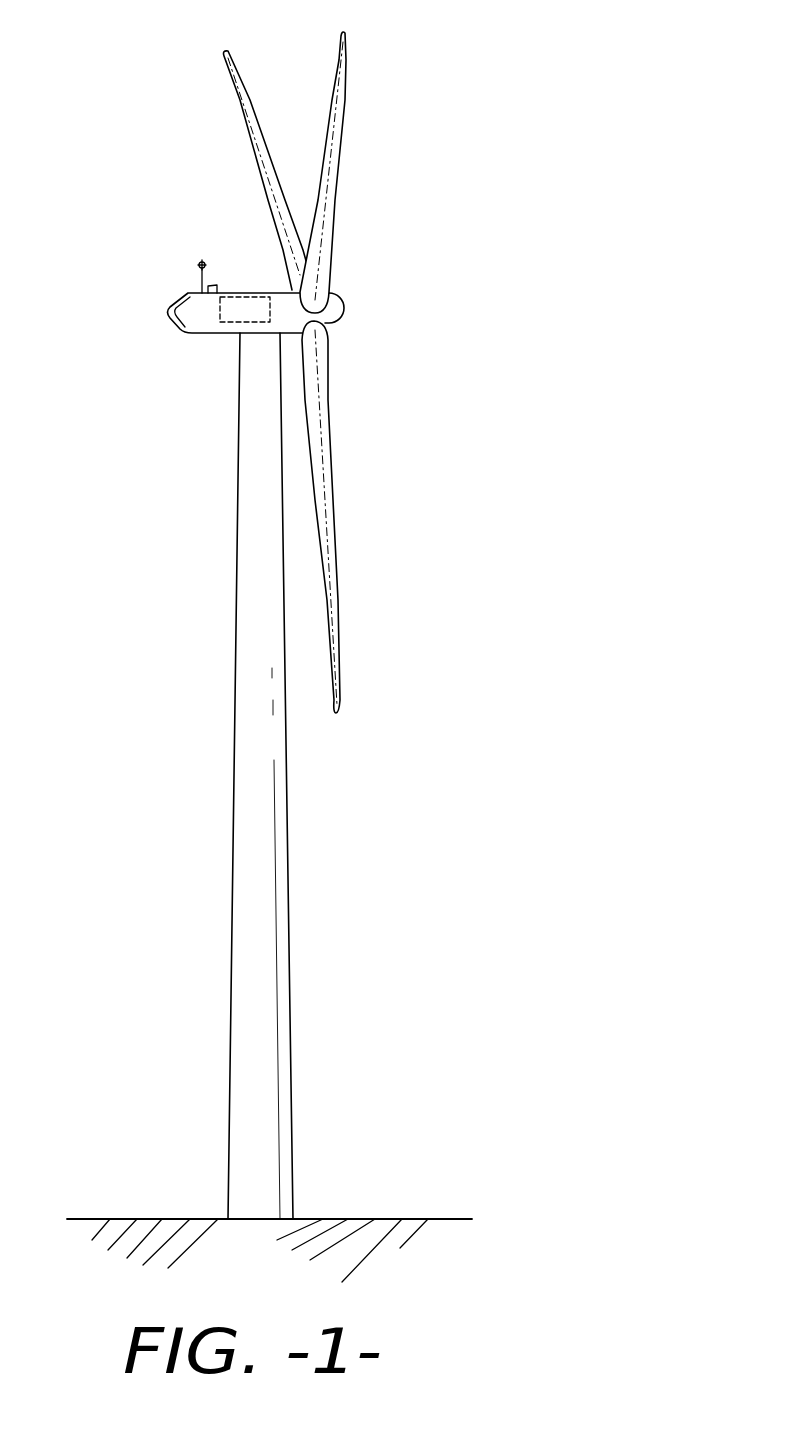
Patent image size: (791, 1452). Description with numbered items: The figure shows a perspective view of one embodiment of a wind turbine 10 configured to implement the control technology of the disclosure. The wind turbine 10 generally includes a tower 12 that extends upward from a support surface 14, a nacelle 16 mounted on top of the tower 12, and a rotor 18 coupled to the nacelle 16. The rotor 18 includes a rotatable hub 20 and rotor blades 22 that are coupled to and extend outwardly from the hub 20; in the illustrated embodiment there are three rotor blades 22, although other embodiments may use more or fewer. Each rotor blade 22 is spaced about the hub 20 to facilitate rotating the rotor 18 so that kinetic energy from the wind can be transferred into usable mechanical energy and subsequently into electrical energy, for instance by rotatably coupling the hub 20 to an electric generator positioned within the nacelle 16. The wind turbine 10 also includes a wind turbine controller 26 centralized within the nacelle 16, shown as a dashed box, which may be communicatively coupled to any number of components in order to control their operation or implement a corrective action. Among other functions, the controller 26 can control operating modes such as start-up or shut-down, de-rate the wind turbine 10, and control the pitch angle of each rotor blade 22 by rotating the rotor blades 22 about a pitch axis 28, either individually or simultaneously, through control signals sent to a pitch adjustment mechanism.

The wind turbine 10 is at (312, 644).
The tower 12 is at (247, 898).
The support surface 14 is at (153, 1219).
The nacelle 16 is at (217, 337).
The rotor 18 is at (320, 360).
The rotatable hub 20 is at (338, 317).
The rotor blade 22 is at (335, 77).
The wind turbine controller 26 is at (248, 297).
The pitch axis 28 is at (268, 212).